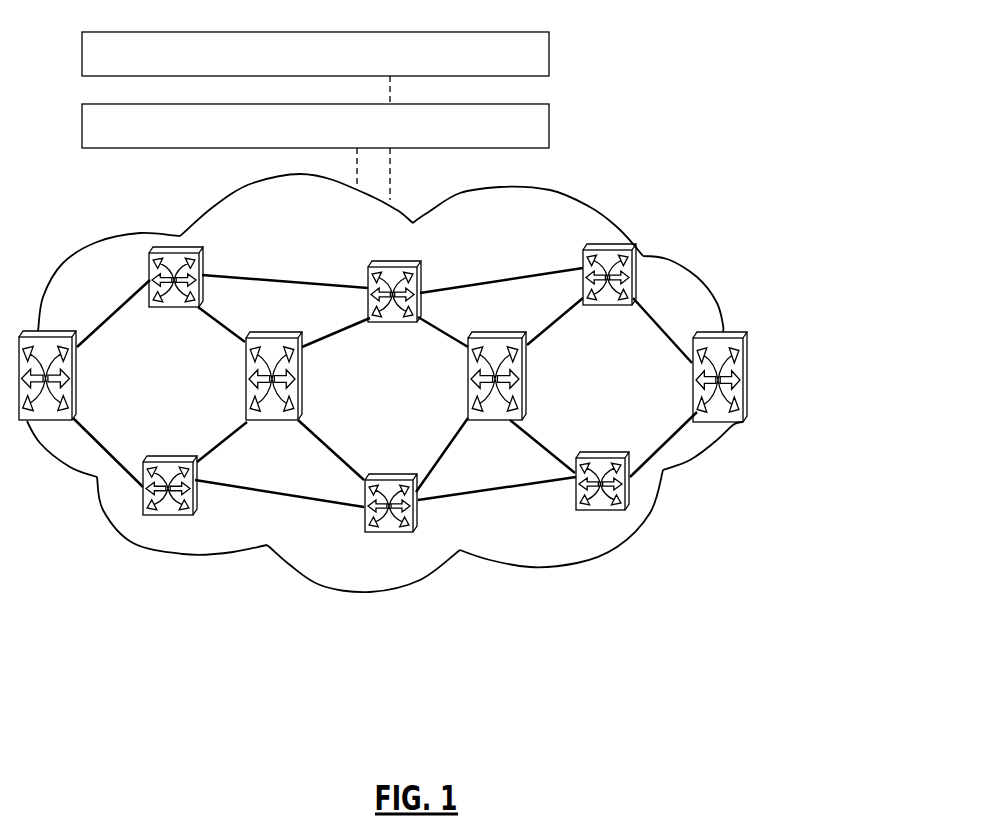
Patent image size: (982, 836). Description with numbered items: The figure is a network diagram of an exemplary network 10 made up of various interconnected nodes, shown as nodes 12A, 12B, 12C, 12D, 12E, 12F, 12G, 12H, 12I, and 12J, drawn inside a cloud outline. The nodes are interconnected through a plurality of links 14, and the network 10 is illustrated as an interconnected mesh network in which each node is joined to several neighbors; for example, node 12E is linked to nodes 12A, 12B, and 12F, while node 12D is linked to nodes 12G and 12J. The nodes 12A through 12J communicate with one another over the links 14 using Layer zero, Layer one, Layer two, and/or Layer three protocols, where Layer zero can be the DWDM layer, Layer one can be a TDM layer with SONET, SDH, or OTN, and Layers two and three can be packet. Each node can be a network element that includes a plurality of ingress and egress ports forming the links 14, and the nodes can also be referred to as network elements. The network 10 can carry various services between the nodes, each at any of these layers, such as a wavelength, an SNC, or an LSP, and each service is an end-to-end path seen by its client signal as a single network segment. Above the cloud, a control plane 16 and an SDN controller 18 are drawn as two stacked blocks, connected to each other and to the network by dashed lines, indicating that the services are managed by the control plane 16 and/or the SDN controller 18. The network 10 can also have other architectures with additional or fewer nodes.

The network 10 is at (677, 82).
The node 12A is at (77, 378).
The node 12B is at (302, 377).
The node 12C is at (525, 380).
The node 12D is at (732, 332).
The node 12E is at (187, 247).
The node 12F is at (415, 261).
The node 12G is at (617, 244).
The node 12H is at (168, 456).
The node 12I is at (378, 474).
The node 12J is at (587, 452).
The link 14 is at (277, 278).
The control plane 16 is at (550, 128).
The SDN controller 18 is at (550, 57).